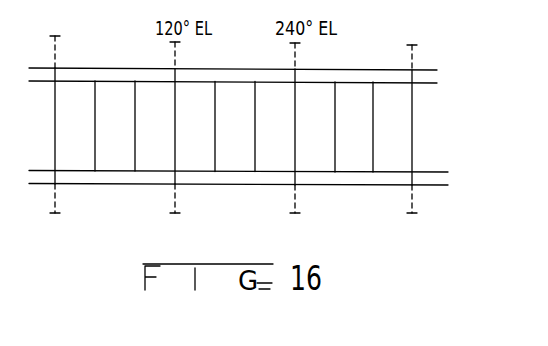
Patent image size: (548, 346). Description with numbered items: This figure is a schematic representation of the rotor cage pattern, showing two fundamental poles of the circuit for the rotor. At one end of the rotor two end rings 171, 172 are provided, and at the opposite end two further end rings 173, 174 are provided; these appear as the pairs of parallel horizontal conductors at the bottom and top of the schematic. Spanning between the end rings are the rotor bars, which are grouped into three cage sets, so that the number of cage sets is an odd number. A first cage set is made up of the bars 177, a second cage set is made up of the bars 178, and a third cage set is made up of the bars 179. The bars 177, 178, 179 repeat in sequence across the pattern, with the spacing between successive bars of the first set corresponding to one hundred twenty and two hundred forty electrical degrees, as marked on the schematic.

The end ring 171 is at (438, 171).
The end ring 172 is at (437, 186).
The end ring 173 is at (428, 68).
The end ring 174 is at (428, 84).
The bars 177 is at (54, 146).
The bars 178 is at (94, 99).
The bars 179 is at (134, 147).